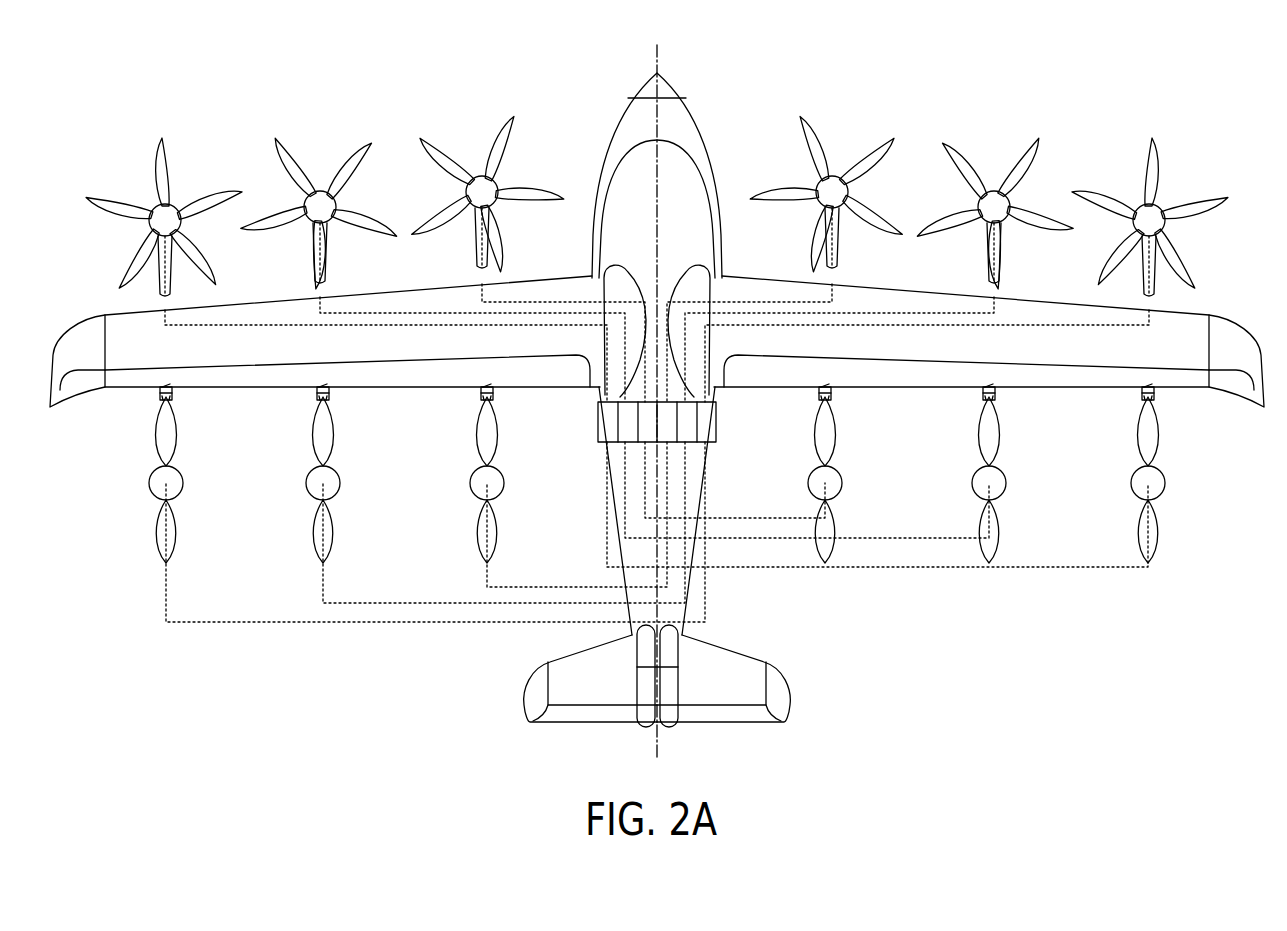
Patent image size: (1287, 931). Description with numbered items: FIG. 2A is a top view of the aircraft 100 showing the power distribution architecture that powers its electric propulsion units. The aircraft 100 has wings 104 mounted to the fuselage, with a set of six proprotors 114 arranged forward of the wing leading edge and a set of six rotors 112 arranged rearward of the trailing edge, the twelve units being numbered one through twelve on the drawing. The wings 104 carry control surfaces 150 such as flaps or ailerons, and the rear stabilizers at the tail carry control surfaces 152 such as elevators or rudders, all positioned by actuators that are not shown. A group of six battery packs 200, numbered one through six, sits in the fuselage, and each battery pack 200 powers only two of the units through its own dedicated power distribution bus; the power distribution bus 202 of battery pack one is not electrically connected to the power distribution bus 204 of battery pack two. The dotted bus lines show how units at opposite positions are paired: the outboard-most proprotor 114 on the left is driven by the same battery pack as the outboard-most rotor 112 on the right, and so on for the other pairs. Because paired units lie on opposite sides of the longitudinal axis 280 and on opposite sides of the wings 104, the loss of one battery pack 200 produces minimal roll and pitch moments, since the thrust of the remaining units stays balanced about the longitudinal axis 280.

The aircraft 100 is at (678, 130).
The wings 104 is at (1228, 332).
The rotors 112 is at (130, 480).
The proprotors 114 is at (120, 238).
The control surfaces 150 is at (252, 395).
The control surfaces 152 is at (572, 712).
The battery packs 200 is at (595, 422).
The power distribution bus 202 is at (275, 322).
The power distribution bus 204 is at (412, 313).
The longitudinal axis 280 is at (651, 66).